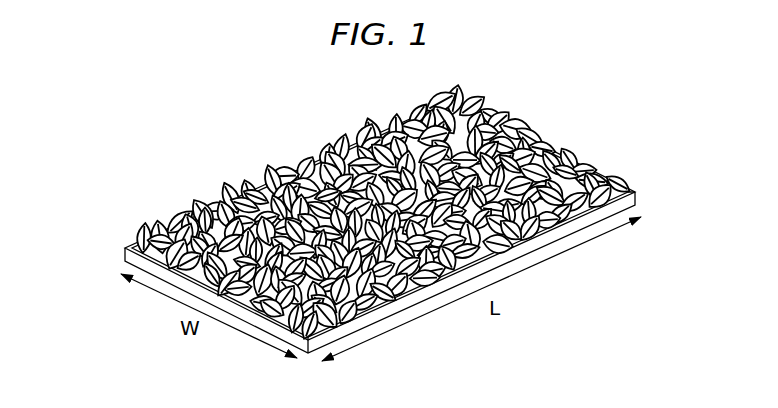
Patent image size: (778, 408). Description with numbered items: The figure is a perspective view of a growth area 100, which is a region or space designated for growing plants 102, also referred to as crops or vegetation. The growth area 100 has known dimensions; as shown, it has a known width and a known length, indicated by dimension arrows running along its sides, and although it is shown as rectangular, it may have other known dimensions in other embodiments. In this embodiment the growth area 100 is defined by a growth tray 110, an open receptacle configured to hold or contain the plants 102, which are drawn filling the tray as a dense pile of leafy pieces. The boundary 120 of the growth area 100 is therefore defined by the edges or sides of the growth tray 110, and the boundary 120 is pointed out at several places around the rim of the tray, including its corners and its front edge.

The growth area 100 is at (166, 116).
The plants 102 is at (378, 138).
The growth tray 110 is at (565, 233).
The boundary 120 is at (226, 194).